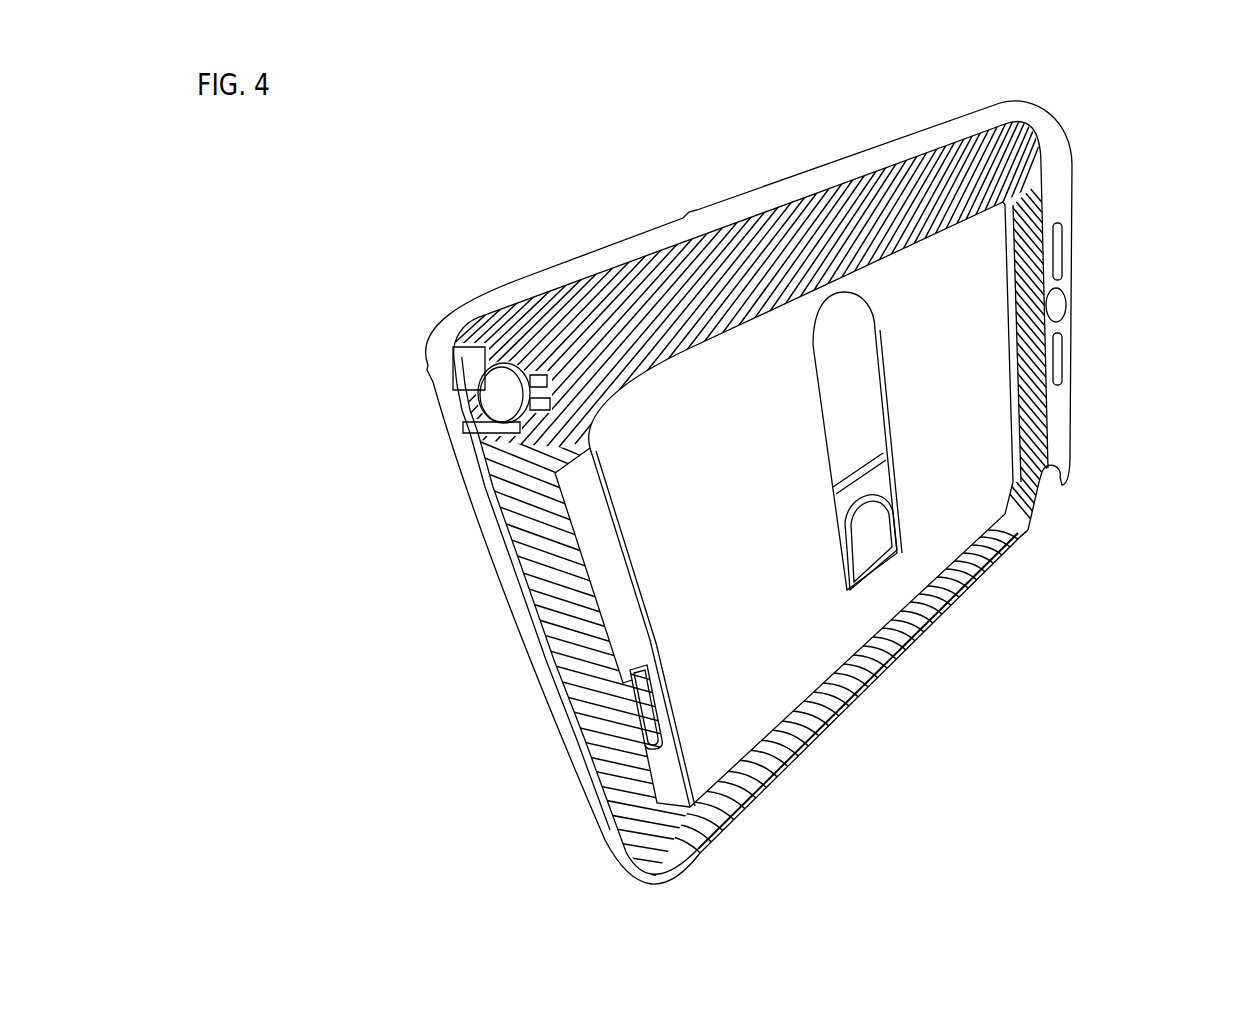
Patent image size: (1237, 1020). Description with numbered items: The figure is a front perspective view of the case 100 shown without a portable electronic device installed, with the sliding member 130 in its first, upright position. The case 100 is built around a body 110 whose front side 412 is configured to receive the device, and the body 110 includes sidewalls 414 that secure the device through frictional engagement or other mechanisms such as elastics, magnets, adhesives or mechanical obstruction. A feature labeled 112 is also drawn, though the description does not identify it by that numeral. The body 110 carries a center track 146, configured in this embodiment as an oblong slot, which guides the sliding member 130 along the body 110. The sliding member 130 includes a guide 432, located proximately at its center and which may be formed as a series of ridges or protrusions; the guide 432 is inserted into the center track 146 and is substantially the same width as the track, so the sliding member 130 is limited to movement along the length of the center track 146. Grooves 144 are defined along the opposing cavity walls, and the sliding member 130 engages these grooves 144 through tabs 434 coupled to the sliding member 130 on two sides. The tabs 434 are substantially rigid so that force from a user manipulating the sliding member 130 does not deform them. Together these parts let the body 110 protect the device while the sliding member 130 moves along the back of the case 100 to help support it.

The case 100 is at (510, 138).
The body 110 is at (1048, 104).
The opening 112 is at (1052, 308).
The sliding member 130 is at (877, 472).
The grooves 144 is at (595, 487).
The center track 146 is at (840, 348).
The front side 412 is at (953, 273).
The sidewalls 414 is at (1053, 195).
The guide 432 is at (870, 545).
The tabs 434 is at (1003, 560).